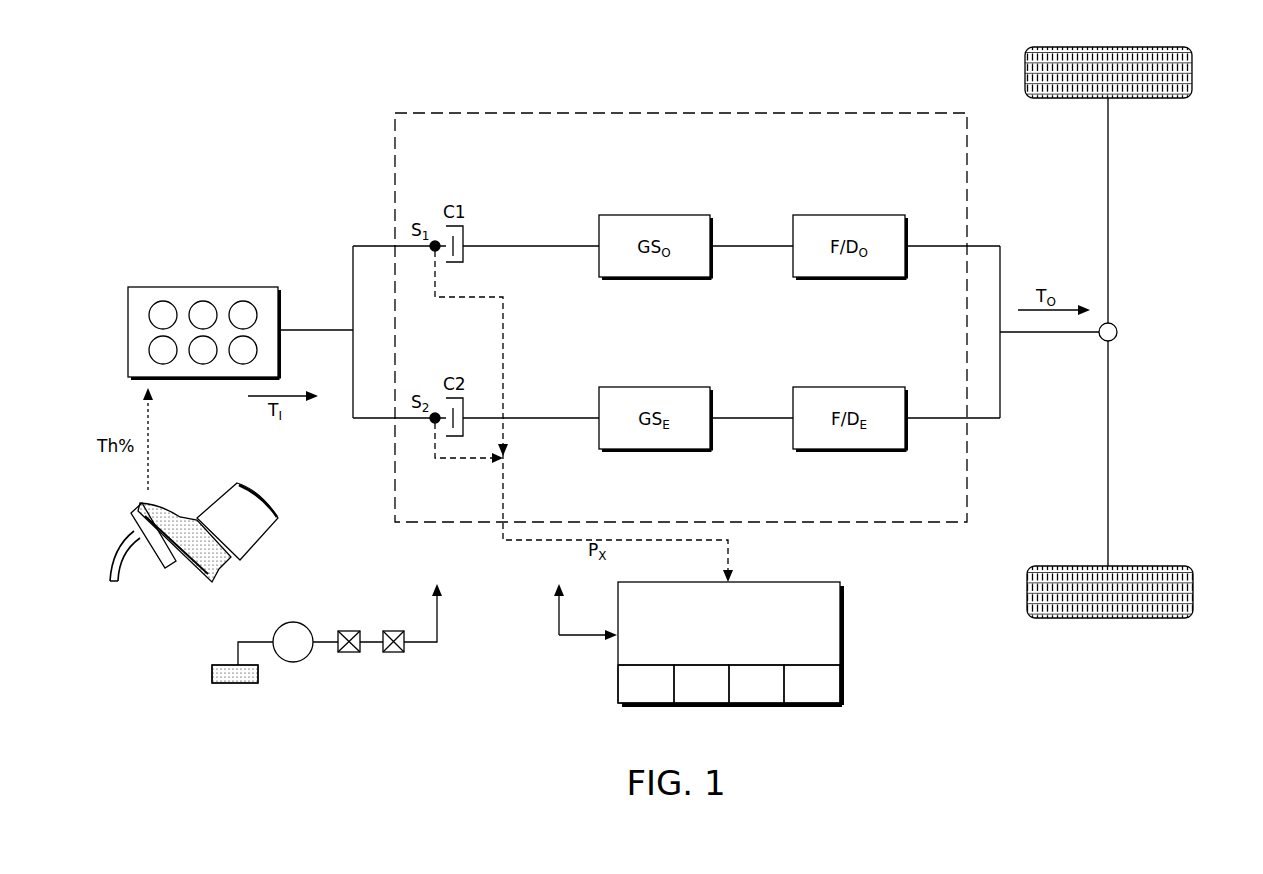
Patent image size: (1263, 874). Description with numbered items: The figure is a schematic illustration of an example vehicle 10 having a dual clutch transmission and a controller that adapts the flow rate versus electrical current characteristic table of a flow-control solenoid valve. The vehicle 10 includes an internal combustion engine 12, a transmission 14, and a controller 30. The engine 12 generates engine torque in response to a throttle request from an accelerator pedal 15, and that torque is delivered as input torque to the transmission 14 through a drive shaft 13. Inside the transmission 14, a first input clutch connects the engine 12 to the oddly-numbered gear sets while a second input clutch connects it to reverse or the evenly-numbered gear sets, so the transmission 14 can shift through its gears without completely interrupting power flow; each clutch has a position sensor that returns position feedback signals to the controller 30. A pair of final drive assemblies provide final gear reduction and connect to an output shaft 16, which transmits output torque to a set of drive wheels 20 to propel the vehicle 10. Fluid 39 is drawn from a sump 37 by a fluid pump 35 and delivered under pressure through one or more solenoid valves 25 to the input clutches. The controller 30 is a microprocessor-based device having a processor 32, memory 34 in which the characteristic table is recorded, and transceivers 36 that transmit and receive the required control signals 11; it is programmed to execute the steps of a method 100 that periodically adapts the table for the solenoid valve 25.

The vehicle 10 is at (205, 107).
The control signals 11 is at (557, 613).
The internal combustion engine 12 is at (206, 286).
The drive shaft 13 is at (345, 328).
The transmission 14 is at (782, 112).
The accelerator pedal 15 is at (120, 545).
The output shaft 16 is at (1024, 334).
The drive wheels 20 is at (1192, 72).
The flow-control solenoid valve 25 is at (408, 660).
The controller 30 is at (843, 625).
The processor 32 is at (701, 684).
The memory 34 is at (756, 684).
The transceivers 36 is at (812, 684).
The method 100 is at (646, 684).
The fluid pump 35 is at (290, 621).
The sump 37 is at (234, 685).
The fluid 39 is at (228, 664).